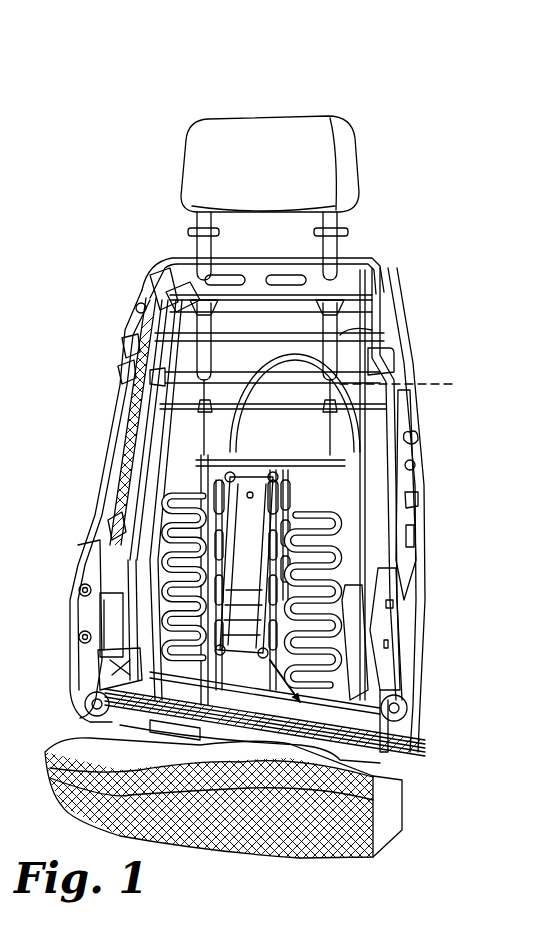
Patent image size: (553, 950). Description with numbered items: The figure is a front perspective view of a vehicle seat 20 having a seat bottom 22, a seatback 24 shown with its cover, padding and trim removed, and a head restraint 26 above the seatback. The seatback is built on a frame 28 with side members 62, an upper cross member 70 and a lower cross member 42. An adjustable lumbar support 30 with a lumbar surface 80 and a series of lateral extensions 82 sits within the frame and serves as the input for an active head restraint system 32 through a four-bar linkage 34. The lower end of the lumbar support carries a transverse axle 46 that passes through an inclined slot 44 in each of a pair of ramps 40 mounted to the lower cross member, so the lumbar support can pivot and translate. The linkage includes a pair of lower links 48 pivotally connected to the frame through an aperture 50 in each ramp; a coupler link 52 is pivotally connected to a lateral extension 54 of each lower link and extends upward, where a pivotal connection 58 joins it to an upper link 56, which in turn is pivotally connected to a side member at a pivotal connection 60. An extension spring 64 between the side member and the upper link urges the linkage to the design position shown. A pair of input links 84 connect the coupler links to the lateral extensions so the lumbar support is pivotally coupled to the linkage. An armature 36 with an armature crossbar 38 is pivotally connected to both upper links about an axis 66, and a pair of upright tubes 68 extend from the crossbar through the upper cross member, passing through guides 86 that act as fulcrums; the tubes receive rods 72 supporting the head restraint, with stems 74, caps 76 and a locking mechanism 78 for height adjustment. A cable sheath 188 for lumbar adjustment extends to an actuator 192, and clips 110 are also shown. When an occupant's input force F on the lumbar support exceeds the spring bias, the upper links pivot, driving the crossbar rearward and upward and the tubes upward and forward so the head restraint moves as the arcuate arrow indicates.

The vehicle seat 20 is at (408, 180).
The seat bottom 22 is at (402, 832).
The seatback 24 is at (424, 333).
The head restraint 26 is at (360, 168).
The frame 28 is at (424, 358).
The adjustable lumbar support 30 is at (196, 480).
The active head restraint system 32 is at (70, 226).
The linkage 34 is at (104, 528).
The armature 36 is at (346, 333).
The armature crossbar 38 is at (268, 358).
The ramps 40 is at (88, 702).
The lower cross member 42 is at (244, 752).
The slot 44 is at (130, 655).
The transverse axle 46 is at (350, 790).
The lower links 48 is at (106, 607).
The aperture 50 is at (410, 718).
The coupler links 52 is at (106, 506).
The lateral extension 54 is at (78, 590).
The upper links 56 is at (124, 338).
The pivotal connection 58 is at (120, 368).
The pivotal connection 60 is at (138, 306).
The side member 62 is at (118, 404).
The extension spring 64 is at (120, 444).
The axis 66 is at (430, 392).
The upright tubes 68 is at (168, 292).
The upper cross member 70 is at (165, 262).
The rods 72 is at (178, 212).
The stems 74 is at (345, 245).
The cap 76 is at (320, 238).
The locking mechanism 78 is at (345, 231).
The lumbar surface 80 is at (310, 468).
The lateral extensions 82 is at (312, 508).
The input links 84 is at (175, 525).
The guides 86 is at (152, 270).
The clips 110 is at (292, 410).
The cable sheath 188 is at (404, 462).
The actuator 192 is at (400, 655).
The input force F is at (248, 553).